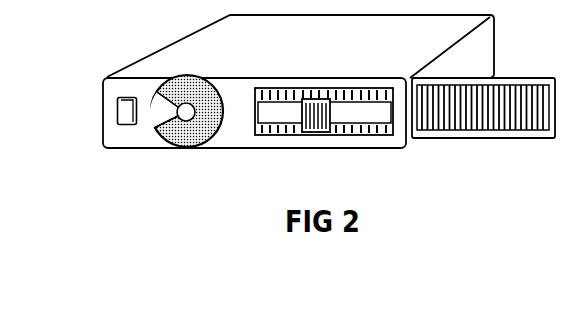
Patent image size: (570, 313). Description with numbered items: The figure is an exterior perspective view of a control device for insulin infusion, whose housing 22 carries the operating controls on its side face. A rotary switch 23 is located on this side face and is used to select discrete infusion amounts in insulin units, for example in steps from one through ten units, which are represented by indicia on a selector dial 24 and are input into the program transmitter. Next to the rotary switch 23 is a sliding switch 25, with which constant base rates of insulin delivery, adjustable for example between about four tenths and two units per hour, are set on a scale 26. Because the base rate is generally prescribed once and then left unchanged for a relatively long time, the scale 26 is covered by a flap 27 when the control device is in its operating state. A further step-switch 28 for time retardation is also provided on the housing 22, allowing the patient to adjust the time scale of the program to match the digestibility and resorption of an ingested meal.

The housing 22 is at (101, 132).
The rotary switch 23 is at (190, 140).
The selector dial 24 is at (157, 127).
The sliding switch 25 is at (327, 132).
The scale 26 is at (280, 133).
The flap 27 is at (468, 138).
The step-switch 28 is at (117, 112).